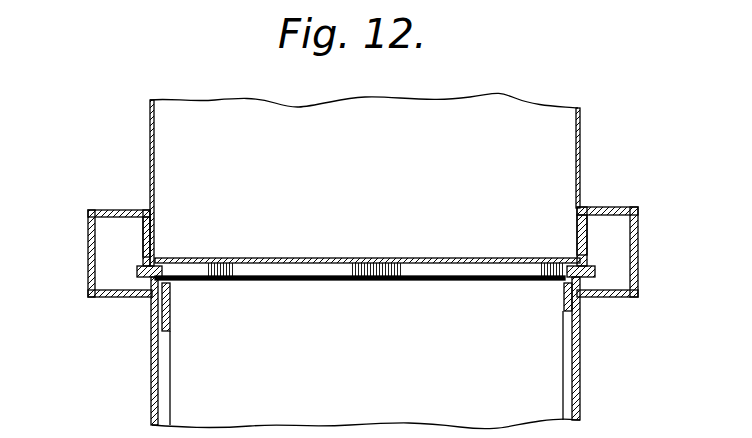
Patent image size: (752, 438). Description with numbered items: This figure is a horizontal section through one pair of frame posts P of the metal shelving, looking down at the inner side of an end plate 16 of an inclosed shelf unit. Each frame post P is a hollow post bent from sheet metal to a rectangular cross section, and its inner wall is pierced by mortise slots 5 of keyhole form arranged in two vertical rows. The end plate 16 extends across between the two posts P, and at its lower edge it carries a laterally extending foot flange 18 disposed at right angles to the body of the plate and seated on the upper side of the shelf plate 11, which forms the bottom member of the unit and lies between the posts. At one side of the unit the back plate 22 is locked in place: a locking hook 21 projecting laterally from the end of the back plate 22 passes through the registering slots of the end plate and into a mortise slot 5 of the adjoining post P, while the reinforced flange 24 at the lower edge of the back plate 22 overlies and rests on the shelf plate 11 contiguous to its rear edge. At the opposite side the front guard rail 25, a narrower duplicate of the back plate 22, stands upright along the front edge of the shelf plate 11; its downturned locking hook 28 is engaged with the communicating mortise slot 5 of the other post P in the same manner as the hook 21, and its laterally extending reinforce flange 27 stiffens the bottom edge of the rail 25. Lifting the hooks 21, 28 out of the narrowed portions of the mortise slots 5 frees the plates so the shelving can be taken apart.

The frame post P is at (349, 252).
The mortise slot 5 is at (147, 241).
The shelf plate 11 is at (365, 260).
The end plate 16 is at (340, 258).
The foot flange 18 is at (300, 281).
The locking hook 21 is at (138, 270).
The locking hook 28 is at (582, 270).
The back plate 22 is at (152, 378).
The reinforced flange 24 is at (170, 378).
The reinforce flange 27 is at (563, 360).
The front guard rail 25 is at (580, 370).